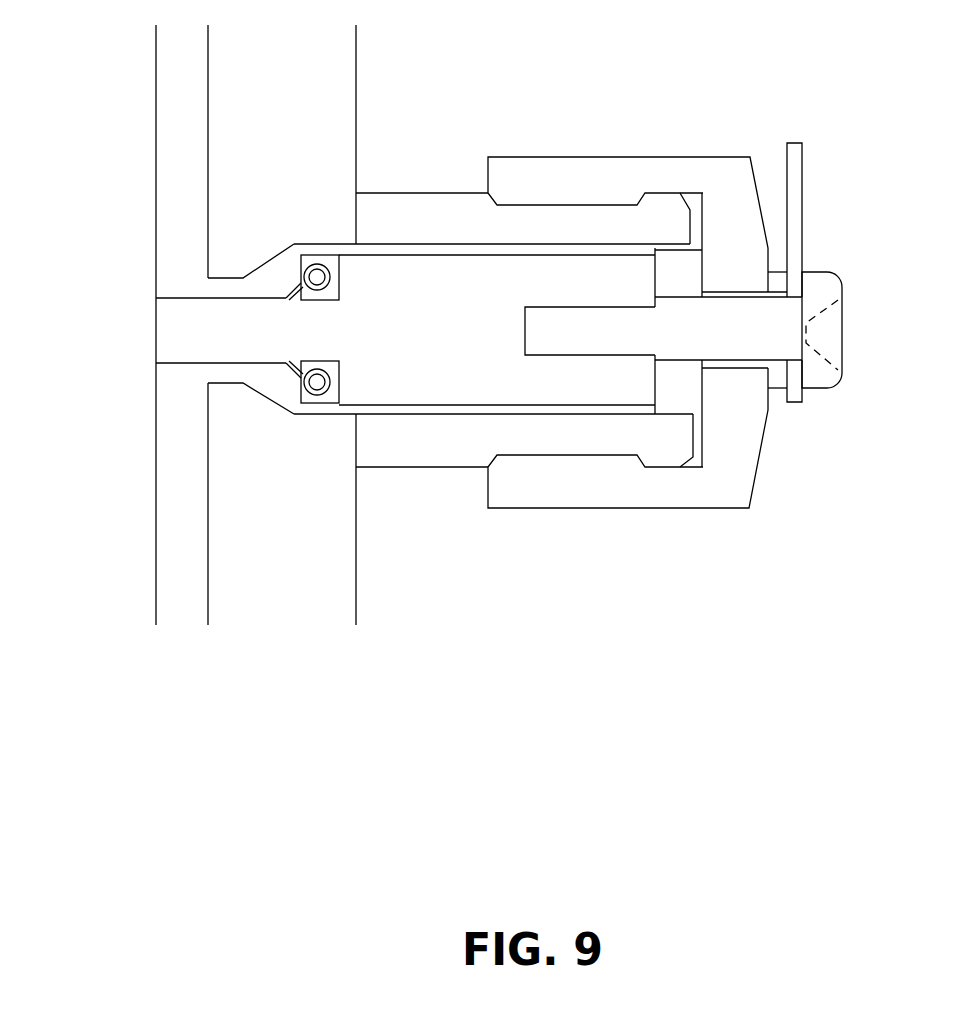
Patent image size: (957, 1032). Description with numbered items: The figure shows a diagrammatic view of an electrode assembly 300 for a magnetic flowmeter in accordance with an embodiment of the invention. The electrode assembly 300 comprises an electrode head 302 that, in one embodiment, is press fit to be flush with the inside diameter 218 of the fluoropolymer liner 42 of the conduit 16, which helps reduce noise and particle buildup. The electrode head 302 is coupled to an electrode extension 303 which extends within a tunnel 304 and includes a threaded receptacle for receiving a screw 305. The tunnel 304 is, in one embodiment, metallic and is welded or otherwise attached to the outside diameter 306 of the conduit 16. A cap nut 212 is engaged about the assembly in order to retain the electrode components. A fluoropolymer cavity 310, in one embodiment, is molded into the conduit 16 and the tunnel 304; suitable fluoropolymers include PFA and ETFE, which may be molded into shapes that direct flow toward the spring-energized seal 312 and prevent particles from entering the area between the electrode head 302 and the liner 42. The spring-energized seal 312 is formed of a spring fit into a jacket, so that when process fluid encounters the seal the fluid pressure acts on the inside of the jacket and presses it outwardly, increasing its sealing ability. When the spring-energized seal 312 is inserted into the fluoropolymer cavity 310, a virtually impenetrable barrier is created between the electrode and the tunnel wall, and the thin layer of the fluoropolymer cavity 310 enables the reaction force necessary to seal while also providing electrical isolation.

The electrode assembly 300 is at (689, 50).
The outside diameter 306 is at (357, 63).
The spring-energized seal 312 is at (347, 258).
The electrode head 302 is at (153, 337).
The inside diameter 218 is at (155, 487).
The fluoropolymer liner 42 is at (182, 512).
The conduit 16 is at (297, 565).
The fluoropolymer cavity 310 is at (265, 382).
The tunnel 304 is at (403, 428).
The electrode extension 303 is at (458, 325).
The cap nut 212 is at (592, 475).
The screw 305 is at (823, 388).